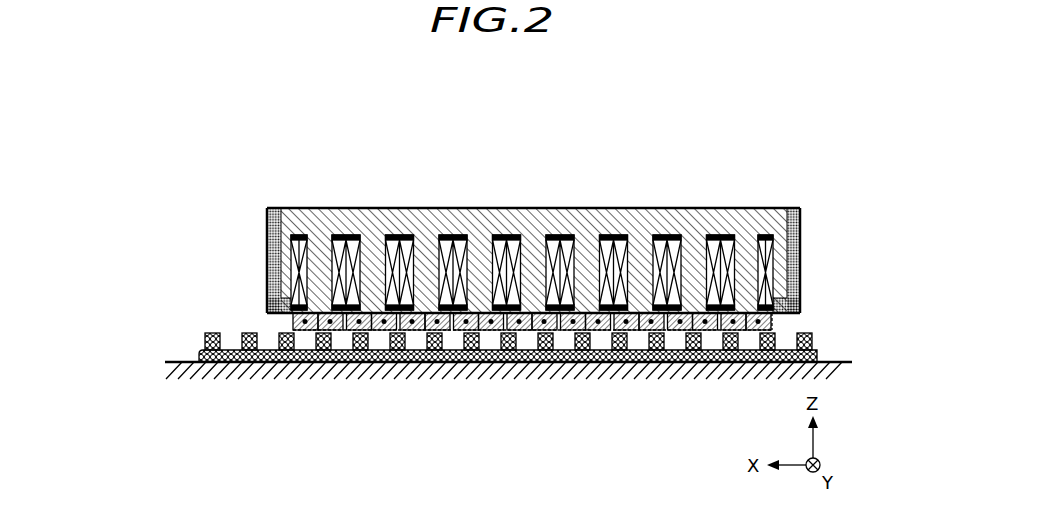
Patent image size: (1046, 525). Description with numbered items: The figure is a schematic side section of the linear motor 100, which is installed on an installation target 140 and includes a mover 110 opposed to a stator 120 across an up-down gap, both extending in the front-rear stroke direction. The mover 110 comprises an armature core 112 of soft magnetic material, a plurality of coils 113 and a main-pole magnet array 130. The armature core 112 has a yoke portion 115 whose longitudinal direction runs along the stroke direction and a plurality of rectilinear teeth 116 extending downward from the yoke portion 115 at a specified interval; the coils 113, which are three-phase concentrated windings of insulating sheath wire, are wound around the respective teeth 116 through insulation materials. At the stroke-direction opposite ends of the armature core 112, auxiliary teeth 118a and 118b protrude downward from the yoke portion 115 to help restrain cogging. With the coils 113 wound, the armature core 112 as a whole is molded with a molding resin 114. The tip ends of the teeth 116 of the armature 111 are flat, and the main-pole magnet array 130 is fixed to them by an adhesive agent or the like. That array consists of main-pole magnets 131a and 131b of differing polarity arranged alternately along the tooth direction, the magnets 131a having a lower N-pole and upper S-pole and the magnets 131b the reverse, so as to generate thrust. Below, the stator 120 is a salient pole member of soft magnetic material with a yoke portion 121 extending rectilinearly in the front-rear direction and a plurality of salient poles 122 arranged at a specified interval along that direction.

The linear motor 100 is at (786, 191).
The mover 110 is at (534, 210).
The armature 111 is at (176, 170).
The armature core 112 is at (270, 216).
The coils 113 is at (270, 268).
The molding resin 114 is at (270, 242).
The yoke portion 115 is at (428, 225).
The teeth 116 is at (321, 250).
The auxiliary tooth 118a is at (268, 289).
The auxiliary tooth 118b is at (826, 260).
The stator 120 is at (126, 297).
The yoke portion 121 is at (200, 356).
The salient poles 122 is at (206, 340).
The main-pole magnet array 130 is at (489, 331).
The main-pole magnet 131a is at (372, 329).
The main-pole magnet 131b is at (380, 329).
The installation target 140 is at (835, 361).